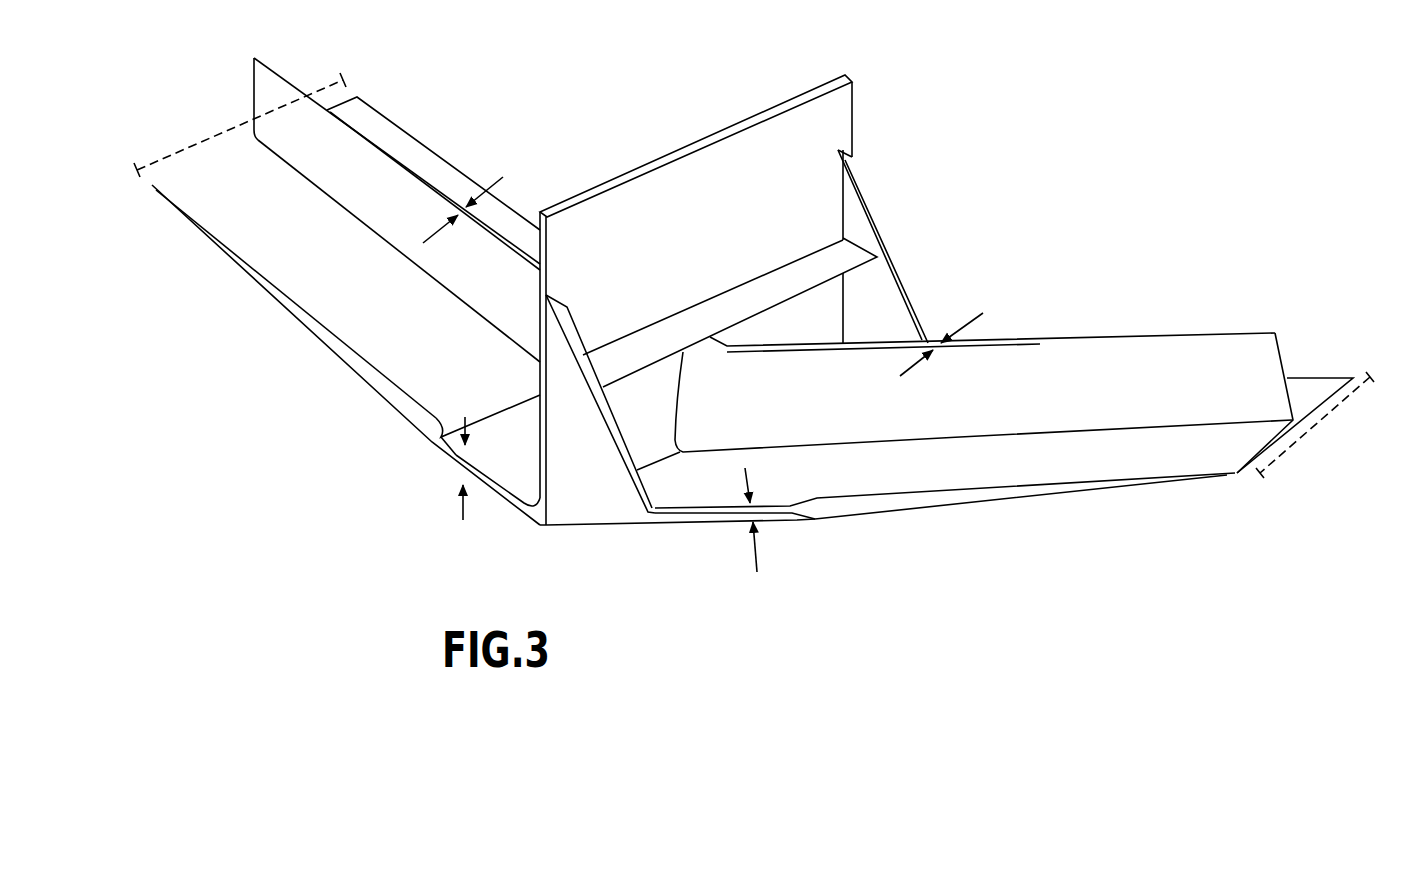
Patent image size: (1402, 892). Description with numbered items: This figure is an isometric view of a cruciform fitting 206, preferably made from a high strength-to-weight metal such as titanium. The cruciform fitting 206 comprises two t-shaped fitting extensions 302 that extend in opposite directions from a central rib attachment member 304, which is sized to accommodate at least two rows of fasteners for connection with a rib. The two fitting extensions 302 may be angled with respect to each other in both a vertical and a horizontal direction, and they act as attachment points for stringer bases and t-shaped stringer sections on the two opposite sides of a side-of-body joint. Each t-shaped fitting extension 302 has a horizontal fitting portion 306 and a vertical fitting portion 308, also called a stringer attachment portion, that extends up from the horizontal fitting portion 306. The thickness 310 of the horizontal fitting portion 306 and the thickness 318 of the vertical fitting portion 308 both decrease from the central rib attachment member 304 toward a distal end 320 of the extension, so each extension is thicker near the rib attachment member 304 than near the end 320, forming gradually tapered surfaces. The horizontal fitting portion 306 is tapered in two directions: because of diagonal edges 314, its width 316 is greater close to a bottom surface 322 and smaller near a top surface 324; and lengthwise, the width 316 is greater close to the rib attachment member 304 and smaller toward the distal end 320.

The cruciform fitting 206 is at (545, 542).
The t-shaped fitting extension 302 is at (280, 305).
The central rib attachment member 304 is at (847, 122).
The horizontal fitting portion 306 is at (173, 205).
The vertical fitting portion 308 is at (357, 132).
The thickness of the horizontal fitting portion 310 is at (460, 465).
The diagonal edges 314 is at (402, 410).
The width of the horizontal fitting portion 316 is at (340, 82).
The thickness of the vertical fitting portion 318 is at (470, 195).
The distal end 320 is at (254, 100).
The bottom surface 322 is at (333, 355).
The top surface 324 is at (370, 275).